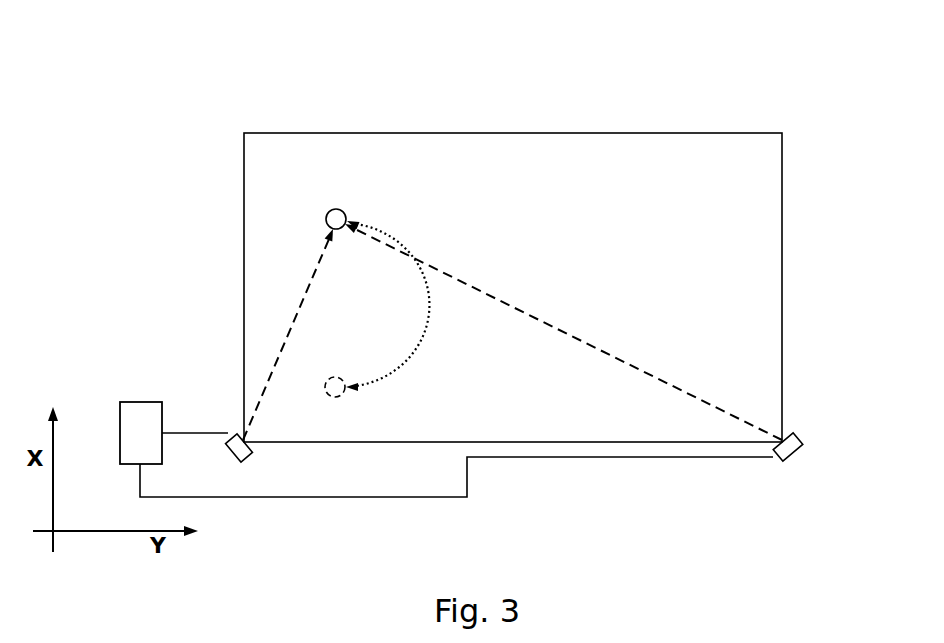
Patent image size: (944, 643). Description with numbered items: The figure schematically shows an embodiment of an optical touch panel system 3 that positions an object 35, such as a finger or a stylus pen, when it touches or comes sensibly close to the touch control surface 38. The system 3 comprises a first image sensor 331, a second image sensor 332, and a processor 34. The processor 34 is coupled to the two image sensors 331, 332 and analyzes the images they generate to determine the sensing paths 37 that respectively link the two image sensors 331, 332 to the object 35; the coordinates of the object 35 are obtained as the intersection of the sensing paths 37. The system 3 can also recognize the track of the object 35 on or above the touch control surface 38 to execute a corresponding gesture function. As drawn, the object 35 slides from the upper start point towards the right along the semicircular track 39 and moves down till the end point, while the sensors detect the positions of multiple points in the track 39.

The optical touch panel system 3 is at (793, 83).
The processor 34 is at (145, 402).
The first image sensor 331 is at (232, 457).
The second image sensor 332 is at (797, 453).
The object 35 is at (331, 210).
The sensing paths 37 is at (403, 252).
The touch control surface 38 is at (711, 208).
The semicircular track 39 is at (396, 232).